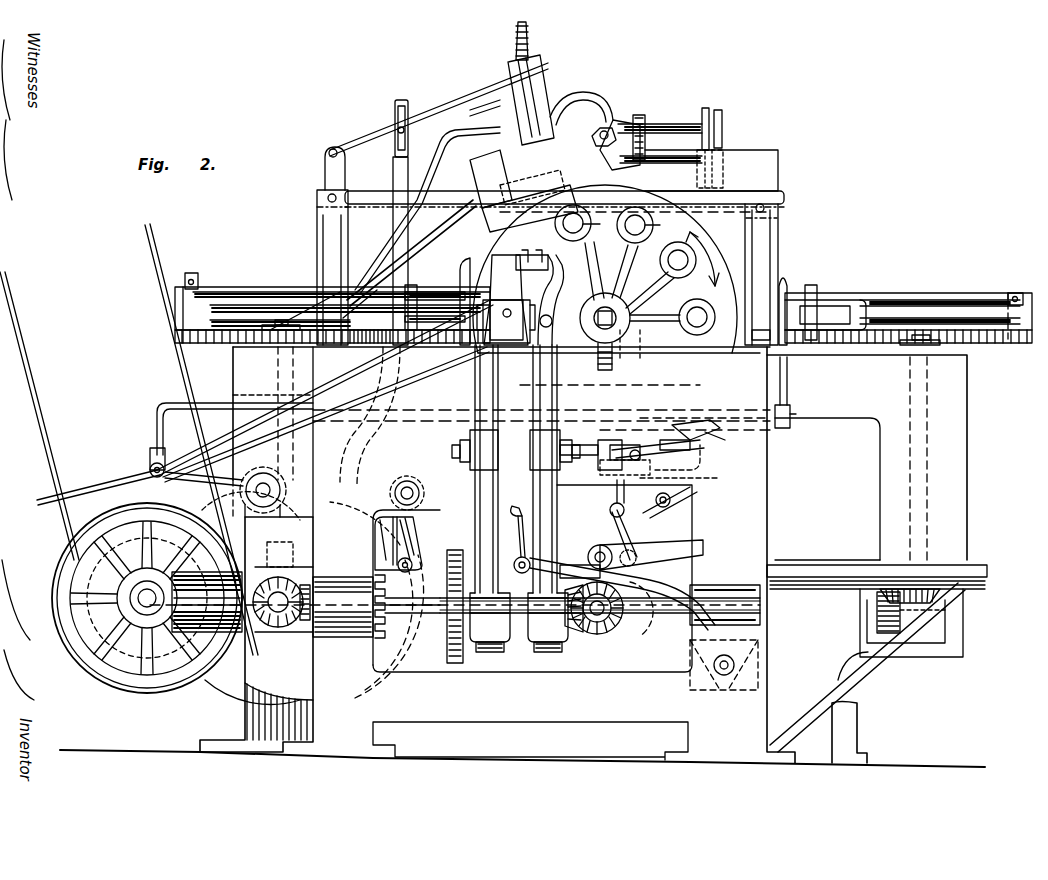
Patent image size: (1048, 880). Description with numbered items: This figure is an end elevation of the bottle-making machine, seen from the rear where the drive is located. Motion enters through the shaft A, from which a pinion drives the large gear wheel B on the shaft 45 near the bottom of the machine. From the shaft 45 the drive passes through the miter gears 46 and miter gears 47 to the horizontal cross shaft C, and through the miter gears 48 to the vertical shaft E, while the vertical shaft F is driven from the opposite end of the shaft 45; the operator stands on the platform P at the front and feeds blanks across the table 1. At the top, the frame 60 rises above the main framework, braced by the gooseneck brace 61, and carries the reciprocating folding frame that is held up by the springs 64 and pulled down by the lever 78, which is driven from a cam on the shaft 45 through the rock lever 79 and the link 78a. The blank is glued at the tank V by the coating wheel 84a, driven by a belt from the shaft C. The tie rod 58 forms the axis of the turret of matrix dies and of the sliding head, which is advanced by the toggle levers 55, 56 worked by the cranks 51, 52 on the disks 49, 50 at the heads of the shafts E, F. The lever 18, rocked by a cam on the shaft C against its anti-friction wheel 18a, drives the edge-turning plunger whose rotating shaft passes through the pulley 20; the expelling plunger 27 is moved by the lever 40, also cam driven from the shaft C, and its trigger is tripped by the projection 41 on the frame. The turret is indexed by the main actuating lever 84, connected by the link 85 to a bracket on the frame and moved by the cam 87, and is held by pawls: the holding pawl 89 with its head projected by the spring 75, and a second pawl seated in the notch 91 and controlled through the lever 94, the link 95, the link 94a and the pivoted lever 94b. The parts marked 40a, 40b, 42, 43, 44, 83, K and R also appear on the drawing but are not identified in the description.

The table 1 is at (778, 200).
The lever 18 is at (494, 380).
The anti-friction wheel 18a is at (490, 640).
The pulley 20 is at (483, 325).
The expelling plunger 27 is at (525, 255).
The lever 40 is at (560, 393).
The eccentric strap 40a is at (550, 642).
The lever 40b is at (120, 488).
The projection 41 is at (787, 378).
The ledge 42 is at (255, 403).
The pivot pipe 43 is at (150, 466).
The link bar 44 is at (216, 476).
The shaft 45 is at (260, 615).
The miter gears 46 is at (286, 628).
The miter gears 47 is at (600, 630).
The miter gears 48 is at (905, 612).
The disk 49 is at (985, 355).
The disk 50 is at (216, 343).
The crank 51 is at (1006, 300).
The crank 52 is at (200, 290).
The toggle lever 55 is at (790, 295).
The toggle lever 56 is at (436, 296).
The tie rod 58 is at (628, 310).
The frame 60 is at (607, 122).
The gooseneck brace 61 is at (425, 168).
The springs 64 is at (517, 37).
The spring 75 is at (700, 428).
The lever 78 is at (430, 120).
The link 78a is at (402, 268).
The rock lever 79 is at (418, 535).
The slide 83 is at (635, 450).
The main actuating lever 84 is at (518, 512).
The coating wheel 84a is at (702, 118).
The link 85 is at (572, 560).
The cam 87 is at (640, 620).
The holding pawl 89 is at (706, 435).
The notch 91 is at (614, 440).
The lever 94 is at (665, 550).
The link 94a is at (612, 543).
The pivoted lever 94b is at (695, 455).
The link 95 is at (680, 440).
The shaft A is at (125, 596).
The large gear wheel B is at (300, 688).
The horizontal cross shaft C is at (420, 612).
The vertical shaft E is at (921, 340).
The vertical shaft F is at (285, 330).
The gear housing K is at (897, 635).
The platform P is at (822, 566).
The rail R is at (610, 383).
The tank V is at (711, 247).